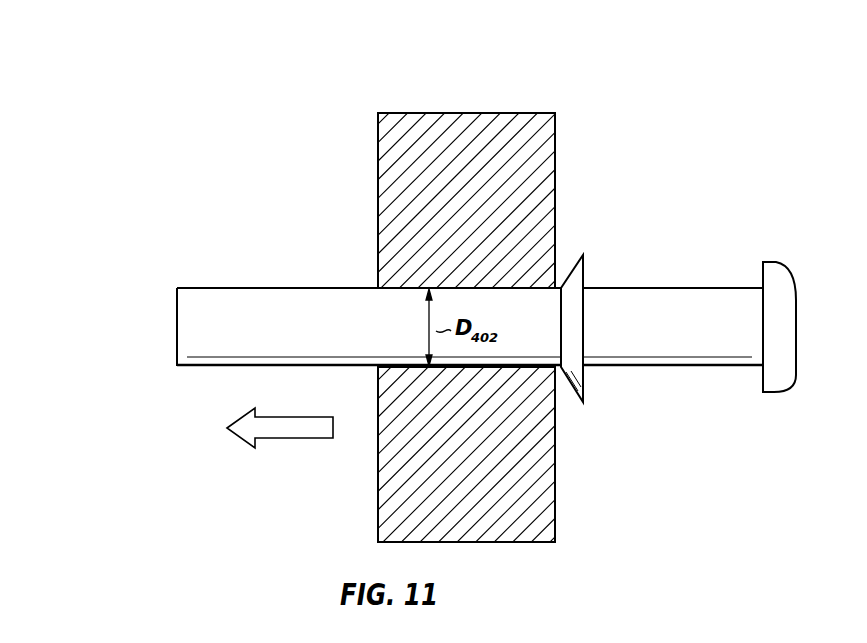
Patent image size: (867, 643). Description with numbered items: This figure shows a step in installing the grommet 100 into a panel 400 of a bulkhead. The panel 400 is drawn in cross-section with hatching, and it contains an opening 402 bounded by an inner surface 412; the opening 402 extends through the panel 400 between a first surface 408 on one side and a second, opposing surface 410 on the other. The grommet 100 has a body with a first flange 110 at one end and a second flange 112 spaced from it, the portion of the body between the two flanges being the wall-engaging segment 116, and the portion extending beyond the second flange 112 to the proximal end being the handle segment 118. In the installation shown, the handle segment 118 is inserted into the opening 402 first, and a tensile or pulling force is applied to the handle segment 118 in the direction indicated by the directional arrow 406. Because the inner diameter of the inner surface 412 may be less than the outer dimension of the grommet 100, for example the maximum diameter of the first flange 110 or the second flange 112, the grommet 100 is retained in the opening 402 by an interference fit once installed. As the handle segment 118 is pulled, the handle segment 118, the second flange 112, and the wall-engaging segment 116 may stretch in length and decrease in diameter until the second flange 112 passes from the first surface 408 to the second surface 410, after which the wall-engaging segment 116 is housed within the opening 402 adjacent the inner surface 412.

The panel 400 is at (470, 98).
The first surface 408 is at (555, 162).
The second surface 410 is at (378, 202).
The inner surface 412 is at (526, 289).
The opening 402 is at (404, 381).
The grommet 100 is at (242, 255).
The handle segment 118 is at (208, 368).
The second flange 112 is at (575, 398).
The wall-engaging segment 116 is at (678, 367).
The first flange 110 is at (775, 393).
The directional arrow 406 is at (287, 440).